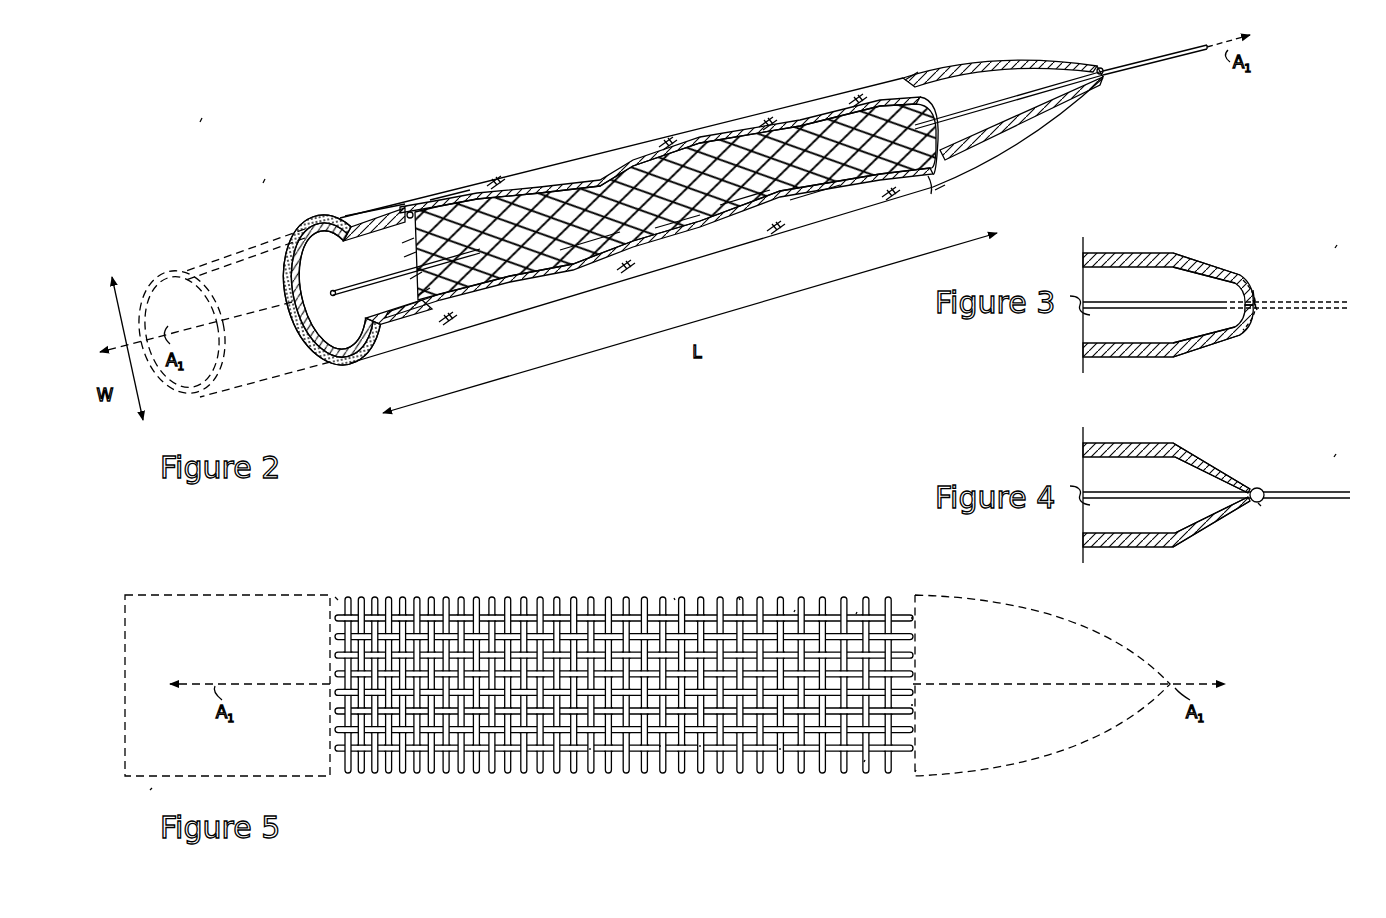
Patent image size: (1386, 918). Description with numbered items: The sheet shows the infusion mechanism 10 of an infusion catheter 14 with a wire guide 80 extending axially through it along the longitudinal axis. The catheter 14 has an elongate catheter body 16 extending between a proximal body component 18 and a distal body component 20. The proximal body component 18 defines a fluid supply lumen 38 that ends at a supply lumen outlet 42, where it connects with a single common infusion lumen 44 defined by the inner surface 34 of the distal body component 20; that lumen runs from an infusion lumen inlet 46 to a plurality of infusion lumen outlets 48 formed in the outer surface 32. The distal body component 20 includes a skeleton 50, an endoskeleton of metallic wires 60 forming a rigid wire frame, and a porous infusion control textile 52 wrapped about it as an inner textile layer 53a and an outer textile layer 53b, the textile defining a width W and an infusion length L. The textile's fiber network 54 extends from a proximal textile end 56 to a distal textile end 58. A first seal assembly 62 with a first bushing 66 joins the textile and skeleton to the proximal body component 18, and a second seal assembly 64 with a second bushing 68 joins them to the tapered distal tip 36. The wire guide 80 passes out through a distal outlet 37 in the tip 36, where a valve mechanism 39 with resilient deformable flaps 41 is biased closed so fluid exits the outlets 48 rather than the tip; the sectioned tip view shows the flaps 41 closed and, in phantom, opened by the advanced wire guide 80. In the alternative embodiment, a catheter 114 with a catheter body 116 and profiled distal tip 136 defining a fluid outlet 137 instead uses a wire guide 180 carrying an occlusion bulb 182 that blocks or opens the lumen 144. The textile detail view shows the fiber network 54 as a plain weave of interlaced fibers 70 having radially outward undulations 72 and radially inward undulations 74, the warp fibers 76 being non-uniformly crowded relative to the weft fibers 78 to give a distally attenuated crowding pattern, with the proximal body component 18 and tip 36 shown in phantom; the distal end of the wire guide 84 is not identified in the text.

In FIG. 2, the infusion mechanism 10 is at (200, 122).
In FIG. 2, the infusion catheter 14 is at (263, 183).
In FIG. 3, the infusion catheter 14 is at (1337, 246).
In FIG. 5, the infusion catheter 14 is at (150, 790).
In FIG. 2, the elongate catheter body 16 is at (500, 323).
In FIG. 3, the elongate catheter body 16 is at (1112, 253).
In FIG. 2, the proximal body component 18 is at (232, 392).
In FIG. 5, the proximal body component 18 is at (230, 593).
In FIG. 2, the distal body component 20 is at (610, 287).
In FIG. 2, the distal body outer surface 32 is at (840, 225).
In FIG. 5, the distal body outer surface 32 is at (430, 755).
In FIG. 2, the distal body inner surface 34 is at (802, 216).
In FIG. 2, the tapered distal tip 36 is at (1035, 127).
In FIG. 3, the tapered distal tip 36 is at (1206, 305).
In FIG. 5, the tapered distal tip 36 is at (1048, 755).
In FIG. 2, the distal outlet 37 is at (1100, 62).
In FIG. 3, the distal outlet 37 is at (1262, 290).
In FIG. 2, the fluid supply lumen 38 is at (272, 348).
In FIG. 5, the fluid supply lumen 38 is at (735, 760).
In FIG. 2, the valve mechanism 39 is at (1100, 82).
In FIG. 3, the valve mechanism 39 is at (1258, 283).
In FIG. 3, the resilient deformable flaps 41 is at (1237, 310).
In FIG. 2, the supply lumen outlet 42 is at (318, 350).
In FIG. 2, the infusion lumen 44 is at (995, 72).
In FIG. 3, the infusion lumen 44 is at (1170, 283).
In FIG. 2, the infusion lumen inlet 46 is at (412, 210).
In FIG. 2, the infusion lumen outlets 48 is at (672, 136).
In FIG. 5, the infusion lumen outlets 48 is at (645, 706).
In FIG. 2, the skeleton 50 is at (312, 225).
In FIG. 2, the porous infusion control textile 52 is at (562, 180).
In FIG. 5, the porous infusion control textile 52 is at (525, 775).
In FIG. 2, the inner textile layer 53a is at (690, 246).
In FIG. 2, the outer textile layer 53b is at (752, 226).
In FIG. 2, the fiber network 54 is at (400, 342).
In FIG. 5, the fiber network 54 is at (624, 720).
In FIG. 2, the proximal textile end 56 is at (375, 197).
In FIG. 5, the proximal textile end 56 is at (338, 600).
In FIG. 2, the distal textile end 58 is at (931, 194).
In FIG. 5, the distal textile end 58 is at (916, 770).
In FIG. 2, the metallic wires 60 is at (468, 188).
In FIG. 2, the first seal assembly 62 is at (300, 262).
In FIG. 2, the second seal assembly 64 is at (952, 185).
In FIG. 2, the first bushing 66 is at (288, 285).
In FIG. 2, the second bushing 68 is at (918, 72).
In FIG. 2, the interlaced fibers 70 is at (357, 212).
In FIG. 5, the interlaced fibers 70 is at (590, 748).
In FIG. 5, the radially outward undulations 72 is at (700, 745).
In FIG. 5, the radially inward undulations 74 is at (795, 610).
In FIG. 5, the warp fibers 76 is at (913, 618).
In FIG. 5, the weft fibers 78 is at (675, 600).
In FIG. 2, the wire guide 80 is at (1165, 65).
In FIG. 3, the wire guide 80 is at (1112, 308).
In FIG. 2, the guide wire distal end 84 is at (1198, 52).
In FIG. 4, the catheter 114 is at (1336, 455).
In FIG. 4, the elongate catheter body 116 is at (1112, 547).
In FIG. 4, the profiled distal tip 136 is at (1211, 495).
In FIG. 4, the fluid outlet 137 is at (1263, 488).
In FIG. 4, the lumen 144 is at (1185, 532).
In FIG. 4, the wire guide 180 is at (1340, 498).
In FIG. 4, the occlusion bulb 182 is at (1258, 503).